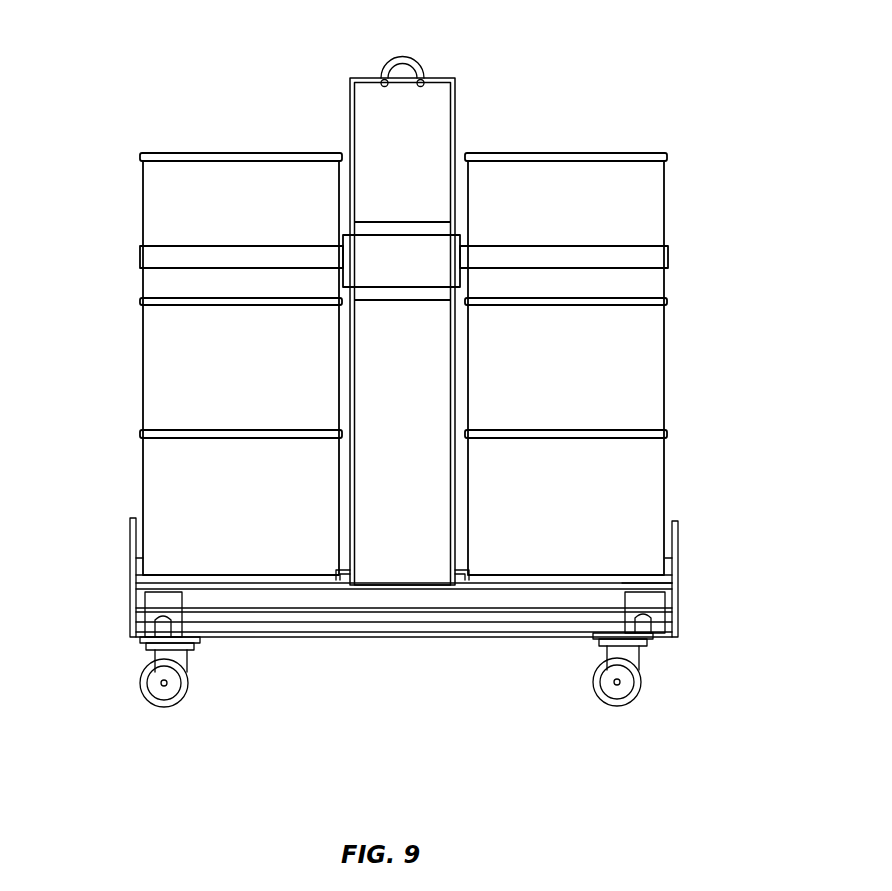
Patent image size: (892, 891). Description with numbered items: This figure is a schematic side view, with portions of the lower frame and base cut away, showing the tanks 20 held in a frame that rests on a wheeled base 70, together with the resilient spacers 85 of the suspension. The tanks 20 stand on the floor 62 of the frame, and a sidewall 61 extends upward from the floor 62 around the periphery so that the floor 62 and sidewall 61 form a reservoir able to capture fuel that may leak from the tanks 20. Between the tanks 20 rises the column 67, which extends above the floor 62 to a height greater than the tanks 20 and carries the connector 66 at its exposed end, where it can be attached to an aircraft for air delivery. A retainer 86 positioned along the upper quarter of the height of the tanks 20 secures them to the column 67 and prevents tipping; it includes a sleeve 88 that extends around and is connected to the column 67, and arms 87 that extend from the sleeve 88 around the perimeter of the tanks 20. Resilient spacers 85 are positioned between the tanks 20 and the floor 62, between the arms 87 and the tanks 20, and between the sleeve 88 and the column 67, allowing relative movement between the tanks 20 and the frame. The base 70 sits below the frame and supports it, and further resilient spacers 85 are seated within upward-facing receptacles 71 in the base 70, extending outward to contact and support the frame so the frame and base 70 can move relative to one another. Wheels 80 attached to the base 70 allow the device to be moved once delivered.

The tanks 20 is at (175, 356).
The sidewall 61 is at (130, 566).
The floor 62 is at (622, 583).
The connector 66 is at (417, 50).
The column 67 is at (457, 105).
The base 70 is at (252, 640).
The receptacles 71 is at (130, 628).
The wheels 80 is at (140, 690).
The resilient spacers 85 is at (393, 228).
The retainer 86 is at (370, 248).
The arms 87 is at (183, 256).
The sleeve 88 is at (427, 247).